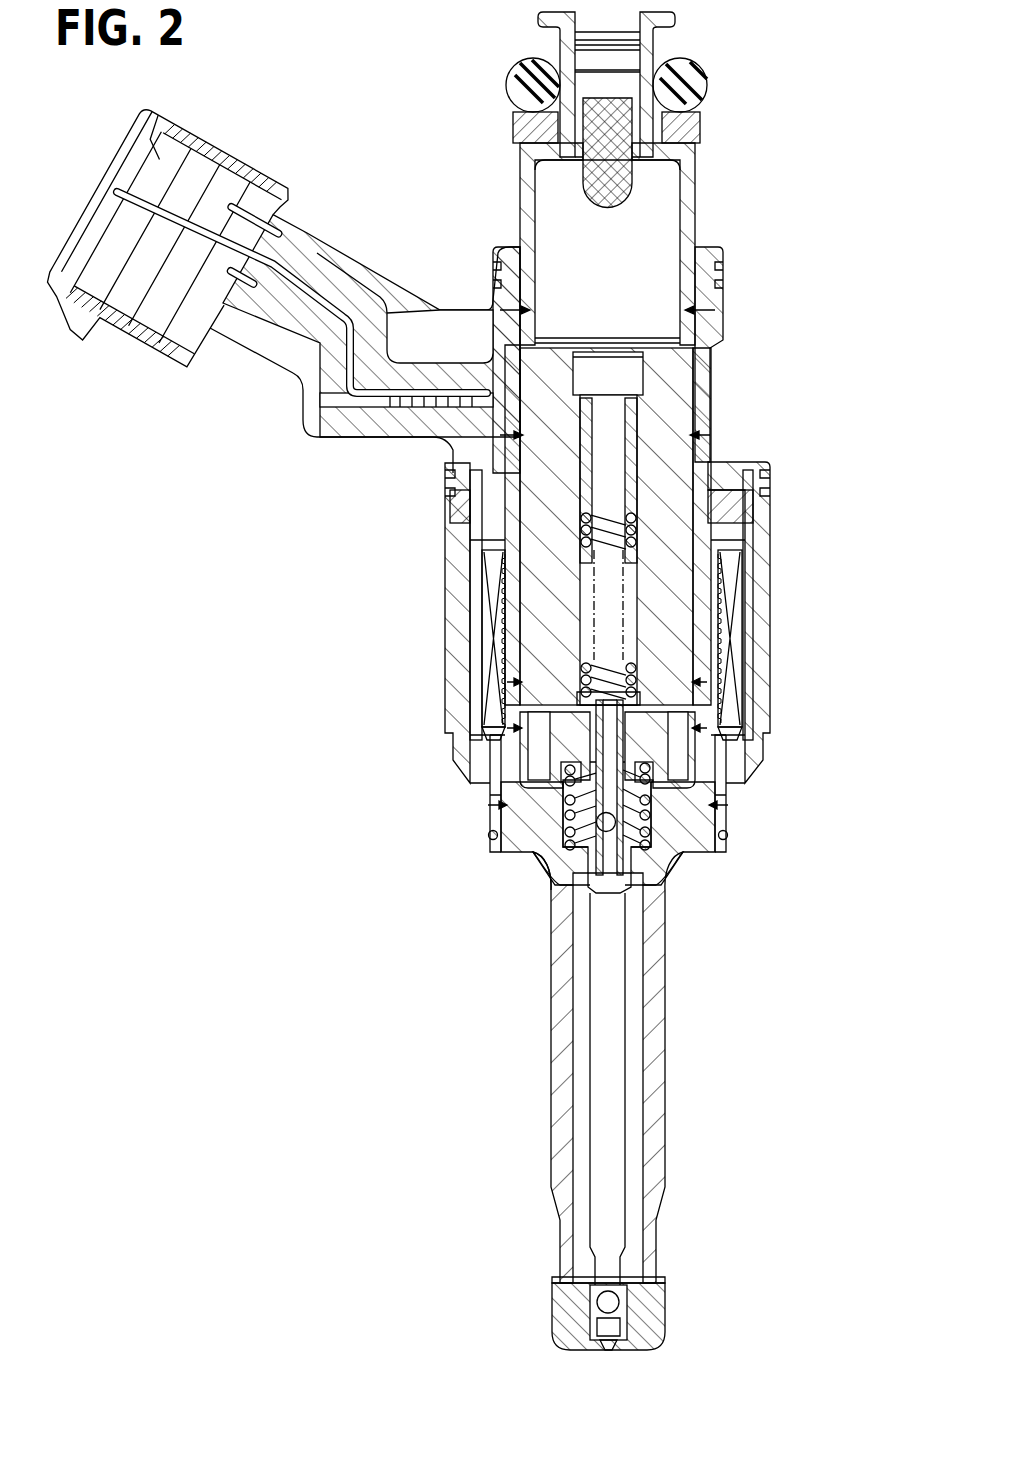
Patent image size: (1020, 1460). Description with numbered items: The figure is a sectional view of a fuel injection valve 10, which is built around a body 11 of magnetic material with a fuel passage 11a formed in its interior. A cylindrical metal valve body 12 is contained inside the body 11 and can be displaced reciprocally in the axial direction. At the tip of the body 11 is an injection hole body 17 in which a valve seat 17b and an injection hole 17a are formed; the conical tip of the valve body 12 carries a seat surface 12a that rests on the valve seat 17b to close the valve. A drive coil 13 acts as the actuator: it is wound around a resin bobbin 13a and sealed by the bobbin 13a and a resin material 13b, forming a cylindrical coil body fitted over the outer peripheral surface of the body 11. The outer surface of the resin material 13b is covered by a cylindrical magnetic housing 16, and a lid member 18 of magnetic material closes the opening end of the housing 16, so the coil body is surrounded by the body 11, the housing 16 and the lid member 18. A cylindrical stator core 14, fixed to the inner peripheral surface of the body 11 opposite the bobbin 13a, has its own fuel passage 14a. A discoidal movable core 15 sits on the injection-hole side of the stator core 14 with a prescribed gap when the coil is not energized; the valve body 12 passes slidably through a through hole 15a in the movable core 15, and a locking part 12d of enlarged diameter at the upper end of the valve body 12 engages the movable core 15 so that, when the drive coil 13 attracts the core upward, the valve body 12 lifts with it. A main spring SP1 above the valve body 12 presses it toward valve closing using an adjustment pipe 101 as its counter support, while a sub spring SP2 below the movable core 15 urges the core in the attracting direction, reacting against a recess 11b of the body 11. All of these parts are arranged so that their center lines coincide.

The fuel injection valve 10 is at (782, 104).
The body 11 is at (668, 988).
The fuel passage 11a is at (637, 1090).
The recess 11b is at (540, 845).
The valve body 12 is at (598, 1035).
The seat surface 12a is at (632, 1347).
The locking part 12d is at (630, 700).
The drive coil 13 is at (727, 563).
The bobbin 13a is at (738, 547).
The resin material 13b is at (738, 680).
The stator core 14 is at (677, 410).
The fuel passage 14a is at (623, 370).
The movable core 15 is at (565, 750).
The through hole 15a is at (615, 730).
The housing 16 is at (758, 638).
The injection hole body 17 is at (627, 1327).
The injection hole 17a is at (610, 1347).
The valve seat 17b is at (632, 1347).
The lid member 18 is at (743, 503).
The adjustment pipe 101 is at (640, 428).
The main spring SP1 is at (610, 650).
The sub spring SP2 is at (558, 800).